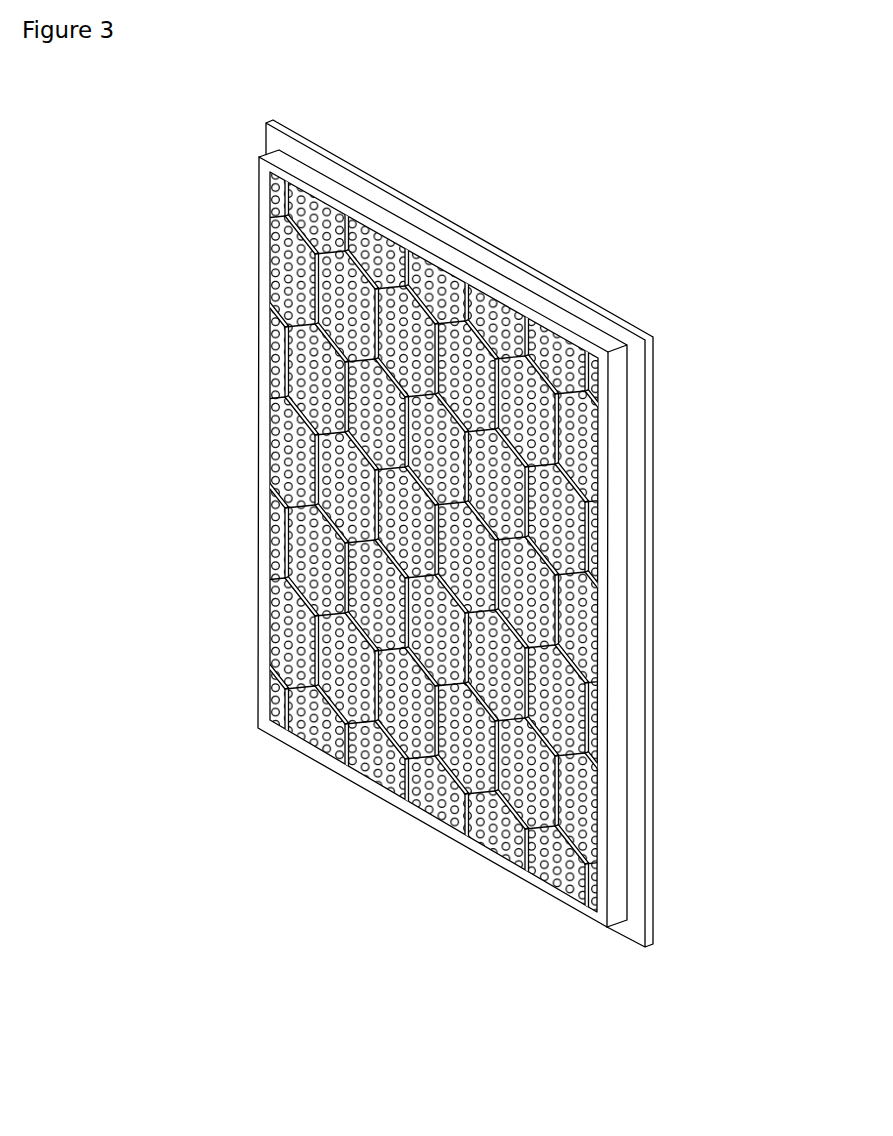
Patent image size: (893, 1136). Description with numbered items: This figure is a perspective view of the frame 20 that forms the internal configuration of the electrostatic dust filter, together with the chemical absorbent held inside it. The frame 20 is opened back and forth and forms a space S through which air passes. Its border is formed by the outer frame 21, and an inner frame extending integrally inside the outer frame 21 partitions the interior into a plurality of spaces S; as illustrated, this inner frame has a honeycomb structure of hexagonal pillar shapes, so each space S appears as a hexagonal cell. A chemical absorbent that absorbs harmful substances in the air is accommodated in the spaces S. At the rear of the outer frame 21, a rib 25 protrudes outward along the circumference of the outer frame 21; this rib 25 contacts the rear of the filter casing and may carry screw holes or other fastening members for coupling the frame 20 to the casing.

The frame 20 is at (456, 538).
The outer frame 21 is at (613, 417).
The rib 25 is at (635, 480).
The space S is at (286, 312).